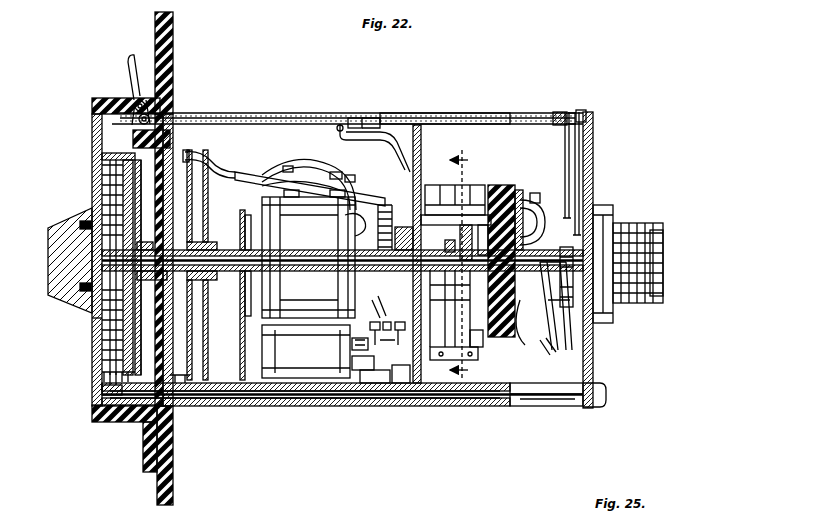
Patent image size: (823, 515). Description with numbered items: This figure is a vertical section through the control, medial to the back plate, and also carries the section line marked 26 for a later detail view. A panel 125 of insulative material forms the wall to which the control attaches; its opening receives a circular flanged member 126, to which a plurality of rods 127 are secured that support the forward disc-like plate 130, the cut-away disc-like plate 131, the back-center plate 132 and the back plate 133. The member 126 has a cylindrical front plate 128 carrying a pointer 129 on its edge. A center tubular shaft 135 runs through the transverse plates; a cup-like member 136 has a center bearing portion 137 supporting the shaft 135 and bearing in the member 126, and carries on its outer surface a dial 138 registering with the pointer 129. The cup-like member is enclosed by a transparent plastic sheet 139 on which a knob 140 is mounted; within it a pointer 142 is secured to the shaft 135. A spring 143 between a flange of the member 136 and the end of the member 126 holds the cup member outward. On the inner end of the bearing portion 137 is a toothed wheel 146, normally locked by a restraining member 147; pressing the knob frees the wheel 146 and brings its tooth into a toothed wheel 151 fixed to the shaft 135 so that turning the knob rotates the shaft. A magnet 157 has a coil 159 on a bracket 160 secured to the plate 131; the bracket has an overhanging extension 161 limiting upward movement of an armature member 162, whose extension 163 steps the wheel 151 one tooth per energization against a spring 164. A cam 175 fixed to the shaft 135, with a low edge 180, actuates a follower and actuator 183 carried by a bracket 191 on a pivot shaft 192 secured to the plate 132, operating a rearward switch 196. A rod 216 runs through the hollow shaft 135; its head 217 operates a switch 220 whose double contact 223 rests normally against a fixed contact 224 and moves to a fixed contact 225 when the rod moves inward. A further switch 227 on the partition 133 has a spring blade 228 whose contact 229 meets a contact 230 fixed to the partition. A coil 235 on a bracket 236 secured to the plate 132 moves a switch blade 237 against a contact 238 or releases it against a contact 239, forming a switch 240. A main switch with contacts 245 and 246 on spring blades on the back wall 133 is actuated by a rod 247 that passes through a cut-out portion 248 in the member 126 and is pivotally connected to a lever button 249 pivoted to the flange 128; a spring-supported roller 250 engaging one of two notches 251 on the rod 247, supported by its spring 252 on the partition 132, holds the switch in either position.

The panel 125 is at (175, 497).
The flanged member 126 is at (158, 345).
The rods 127 is at (322, 408).
The cylindrical front plate 128 is at (146, 445).
The pointer 129 is at (89, 107).
The forward disc-like plate 130 is at (219, 400).
The cut-away disc-like plate 131 is at (246, 400).
The back-center plate 132 is at (446, 384).
The back plate 133 is at (595, 360).
The center tubular shaft 135 is at (293, 208).
The cup-like member 136 is at (137, 330).
The center bearing portion 137 is at (95, 276).
The dial 138 is at (92, 397).
The transparent plastic sheet 139 is at (92, 320).
The knob 140 is at (62, 255).
The pointer 142 is at (90, 178).
The spring 143 is at (92, 383).
The toothed wheel 146 is at (181, 400).
The restraining member 147 is at (172, 143).
The toothed wheel 151 is at (197, 199).
The magnet 157 is at (272, 166).
The coil 159 is at (343, 230).
The bracket 160 is at (243, 226).
The overhanging extension 161 is at (300, 150).
The armature member 162 is at (310, 185).
The extension 163 is at (260, 168).
The spring 164 is at (386, 204).
The cam 175 is at (498, 230).
The low edge 180 is at (455, 190).
The follower and actuator 183 is at (478, 348).
The bracket 191 is at (460, 400).
The pivot shaft 192 is at (526, 347).
The switch 196 is at (476, 185).
The rod 216 is at (308, 254).
The head 217 is at (484, 332).
The switch 220 is at (509, 180).
The double contact 223 is at (558, 195).
The fixed contact 224 is at (581, 109).
The fixed contact 225 is at (518, 195).
The switch 227 is at (600, 318).
The spring blade 228 is at (549, 358).
The contact 229 is at (613, 222).
The contact 230 is at (660, 265).
The coil 235 is at (300, 405).
The bracket 236 is at (372, 384).
The switch blade 237 is at (360, 357).
The contact 238 is at (330, 345).
The contact 239 is at (398, 384).
The switch 240 is at (385, 328).
The contact 245 is at (590, 120).
The contact 246 is at (561, 110).
The rod 247 is at (478, 117).
The cut-out portion 248 is at (137, 96).
The lever button 249 is at (131, 60).
The roller 250 is at (338, 130).
The notches 251 is at (357, 118).
The spring 252 is at (385, 134).
The section line 26 is at (468, 265).